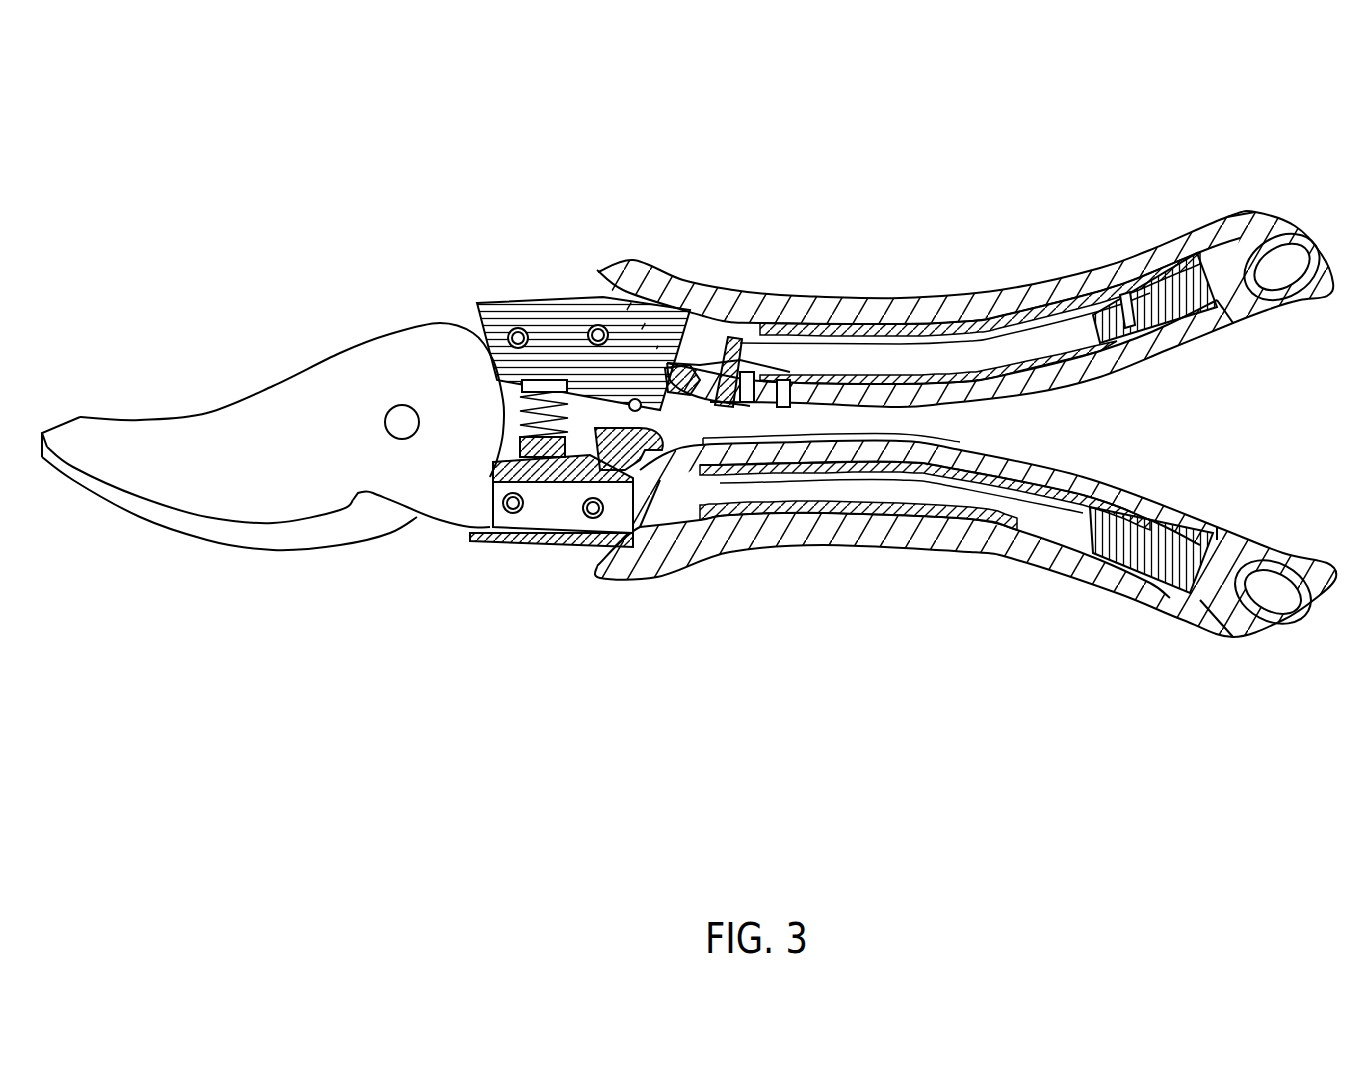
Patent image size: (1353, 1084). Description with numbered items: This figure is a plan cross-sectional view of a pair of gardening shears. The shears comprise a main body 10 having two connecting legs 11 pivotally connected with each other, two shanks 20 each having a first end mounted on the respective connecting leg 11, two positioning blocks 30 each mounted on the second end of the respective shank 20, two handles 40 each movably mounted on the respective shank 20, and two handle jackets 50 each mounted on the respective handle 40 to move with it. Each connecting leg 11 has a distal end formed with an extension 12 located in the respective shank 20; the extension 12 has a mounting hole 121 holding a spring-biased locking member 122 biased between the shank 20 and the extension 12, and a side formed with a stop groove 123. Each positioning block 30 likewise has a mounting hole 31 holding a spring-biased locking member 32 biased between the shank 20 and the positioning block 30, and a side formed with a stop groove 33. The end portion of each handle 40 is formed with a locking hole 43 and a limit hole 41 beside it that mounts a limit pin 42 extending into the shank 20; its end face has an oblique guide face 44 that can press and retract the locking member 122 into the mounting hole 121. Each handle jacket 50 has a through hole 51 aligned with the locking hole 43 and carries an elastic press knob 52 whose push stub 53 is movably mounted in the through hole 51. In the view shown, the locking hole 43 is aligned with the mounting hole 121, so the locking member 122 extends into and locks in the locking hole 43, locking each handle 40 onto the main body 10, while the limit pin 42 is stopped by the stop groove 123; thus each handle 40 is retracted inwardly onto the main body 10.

The main body 10 is at (450, 307).
The connecting leg 11 is at (593, 300).
The extension 12 is at (713, 560).
The mounting hole 121 is at (797, 310).
The spring-biased locking member 122 is at (720, 310).
The stop groove 123 is at (757, 560).
The shank 20 is at (1023, 305).
The positioning block 30 is at (1153, 283).
The mounting hole 31 is at (1130, 318).
The spring-biased locking member 32 is at (1133, 325).
The stop groove 33 is at (1053, 560).
The handle 40 is at (933, 303).
The limit hole 41 is at (643, 565).
The limit pin 42 is at (670, 565).
The locking hole 43 is at (828, 310).
The oblique guide face 44 is at (690, 290).
The handle jacket 50 is at (968, 285).
The through hole 51 is at (565, 310).
The elastic press knob 52 is at (780, 407).
The push stub 53 is at (870, 310).